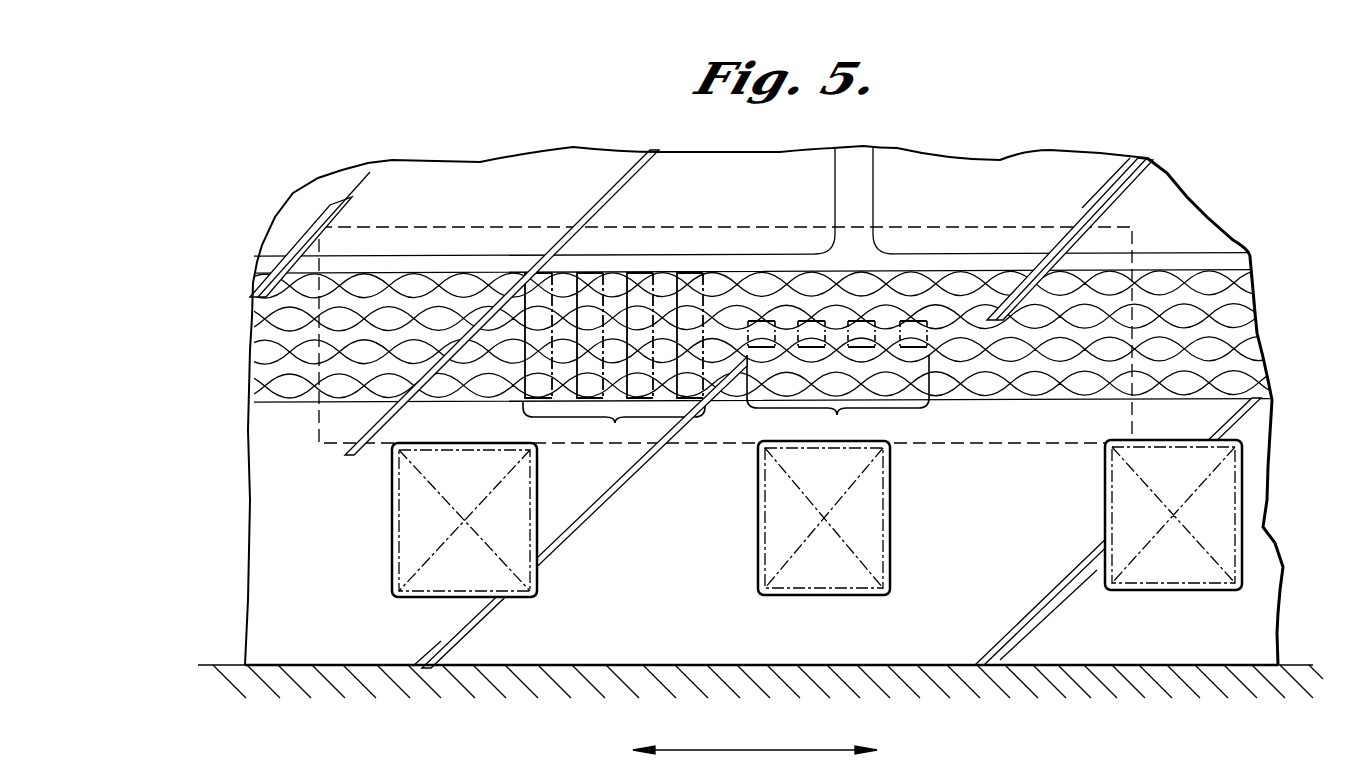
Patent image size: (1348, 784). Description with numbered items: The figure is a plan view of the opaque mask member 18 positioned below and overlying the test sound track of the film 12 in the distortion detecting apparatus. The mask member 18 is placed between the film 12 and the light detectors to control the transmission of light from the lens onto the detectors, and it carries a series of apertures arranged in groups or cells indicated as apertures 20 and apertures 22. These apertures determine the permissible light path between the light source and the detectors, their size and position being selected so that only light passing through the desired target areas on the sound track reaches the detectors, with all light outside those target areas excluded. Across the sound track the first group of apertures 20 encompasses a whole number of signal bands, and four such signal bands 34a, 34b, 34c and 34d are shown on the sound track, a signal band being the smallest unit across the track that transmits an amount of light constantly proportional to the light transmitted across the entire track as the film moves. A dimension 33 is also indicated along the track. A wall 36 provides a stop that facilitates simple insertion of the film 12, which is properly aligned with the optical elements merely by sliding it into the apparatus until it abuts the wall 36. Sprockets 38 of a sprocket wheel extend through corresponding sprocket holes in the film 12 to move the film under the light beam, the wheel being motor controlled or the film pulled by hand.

The film 12 is at (1178, 168).
The mask member 18 is at (548, 228).
The apertures (first group or cell) 20 is at (614, 358).
The apertures (second group or cell) 22 is at (838, 380).
The width dimension 33 is at (748, 755).
The signal band 34a is at (1287, 302).
The signal band 34b is at (203, 307).
The signal band 34c is at (1258, 332).
The signal band 34d is at (180, 370).
The wall 36 is at (1298, 665).
The sprockets 38 is at (393, 568).